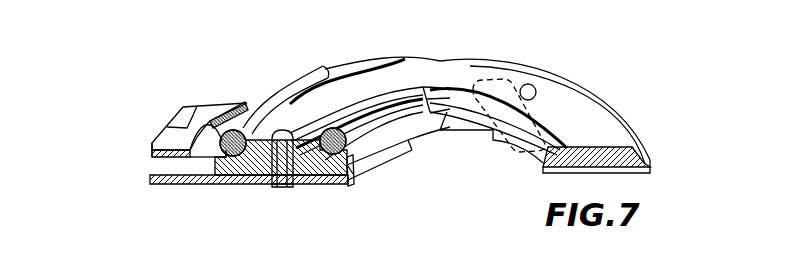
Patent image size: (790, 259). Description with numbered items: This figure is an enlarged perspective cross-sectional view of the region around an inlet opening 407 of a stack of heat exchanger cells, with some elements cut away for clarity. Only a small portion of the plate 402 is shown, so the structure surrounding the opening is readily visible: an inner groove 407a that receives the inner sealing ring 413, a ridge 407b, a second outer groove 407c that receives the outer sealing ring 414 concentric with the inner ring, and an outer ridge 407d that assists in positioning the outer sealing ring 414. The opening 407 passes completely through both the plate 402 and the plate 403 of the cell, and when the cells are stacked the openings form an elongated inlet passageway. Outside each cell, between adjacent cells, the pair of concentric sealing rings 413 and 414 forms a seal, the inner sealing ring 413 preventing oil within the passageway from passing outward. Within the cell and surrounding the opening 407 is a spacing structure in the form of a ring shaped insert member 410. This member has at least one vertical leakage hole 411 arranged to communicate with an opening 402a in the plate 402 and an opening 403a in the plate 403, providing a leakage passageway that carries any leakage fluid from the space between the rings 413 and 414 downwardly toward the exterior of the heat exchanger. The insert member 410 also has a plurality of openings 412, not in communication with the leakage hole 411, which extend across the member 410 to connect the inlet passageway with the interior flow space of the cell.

The plate 402 is at (177, 130).
The opening 402a is at (280, 130).
The plate 403 is at (148, 182).
The opening 403a is at (283, 187).
The inlet opening 407 is at (380, 158).
The inner groove 407a is at (348, 188).
The ridge 407b is at (341, 100).
The second outer groove 407c is at (233, 151).
The outer ridge 407d is at (200, 130).
The ring shaped insert member 410 is at (607, 137).
The vertical leakage hole 411 is at (535, 87).
The openings 412 is at (540, 165).
The inner sealing ring 413 is at (407, 85).
The outer sealing ring 414 is at (303, 78).